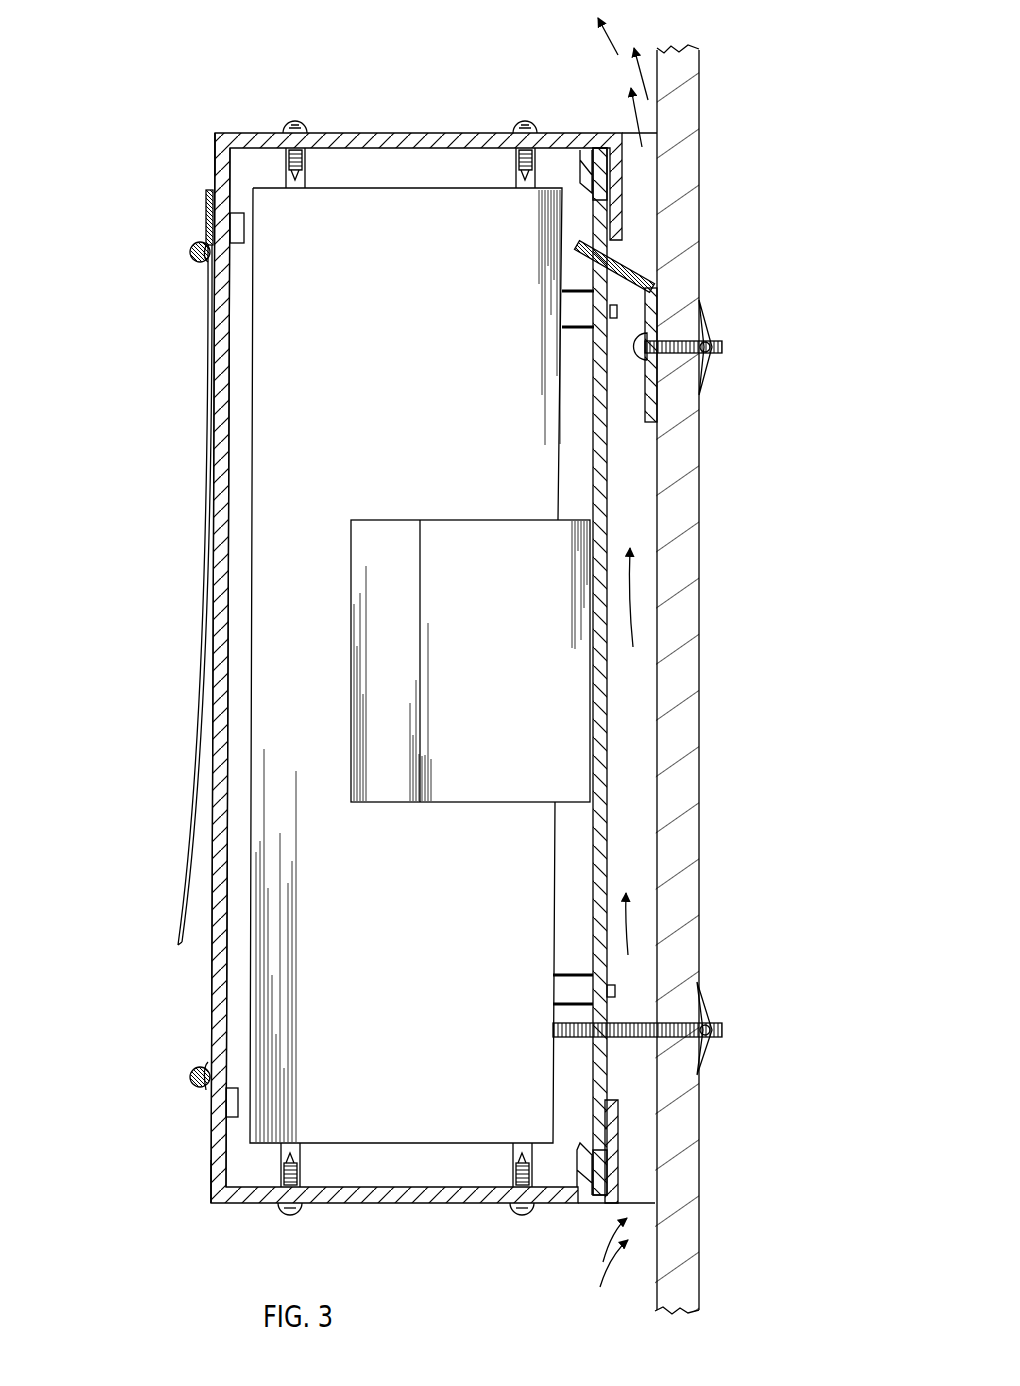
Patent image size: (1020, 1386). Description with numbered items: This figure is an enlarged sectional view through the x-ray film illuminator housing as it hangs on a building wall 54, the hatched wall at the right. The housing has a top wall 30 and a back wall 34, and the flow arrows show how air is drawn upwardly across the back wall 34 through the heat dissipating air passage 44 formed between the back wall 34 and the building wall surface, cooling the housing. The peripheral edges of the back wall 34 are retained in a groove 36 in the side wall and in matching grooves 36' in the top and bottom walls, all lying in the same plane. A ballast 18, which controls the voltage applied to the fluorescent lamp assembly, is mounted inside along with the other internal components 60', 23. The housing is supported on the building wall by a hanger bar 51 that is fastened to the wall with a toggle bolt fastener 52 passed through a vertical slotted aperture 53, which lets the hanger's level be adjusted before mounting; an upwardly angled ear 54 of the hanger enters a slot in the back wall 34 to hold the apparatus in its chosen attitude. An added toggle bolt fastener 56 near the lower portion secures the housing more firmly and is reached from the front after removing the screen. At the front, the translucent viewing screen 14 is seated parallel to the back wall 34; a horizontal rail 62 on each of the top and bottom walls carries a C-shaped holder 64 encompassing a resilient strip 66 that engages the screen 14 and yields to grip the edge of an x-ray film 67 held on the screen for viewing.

The translucent viewing screen 14 is at (212, 527).
The ballast 18 is at (365, 648).
The lower electronic module 23 is at (300, 979).
The top wall 30 is at (431, 133).
The back wall 34 is at (607, 500).
The groove 36 is at (596, 149).
The groove 36' is at (670, 1195).
The air passage 44 is at (640, 728).
The hanger bar 51 is at (652, 413).
The toggle bolt fastener 52 is at (731, 355).
The vertical slotted aperture 53 is at (658, 337).
The ear 54 is at (630, 265).
The added toggle bolt fastener 56 is at (708, 1060).
The upper electronic module 60' is at (434, 495).
The horizontal rail 62 is at (215, 162).
The C-shaped holder 64 is at (190, 246).
The resilient strip 66 is at (203, 263).
The x-ray film 67 is at (208, 481).